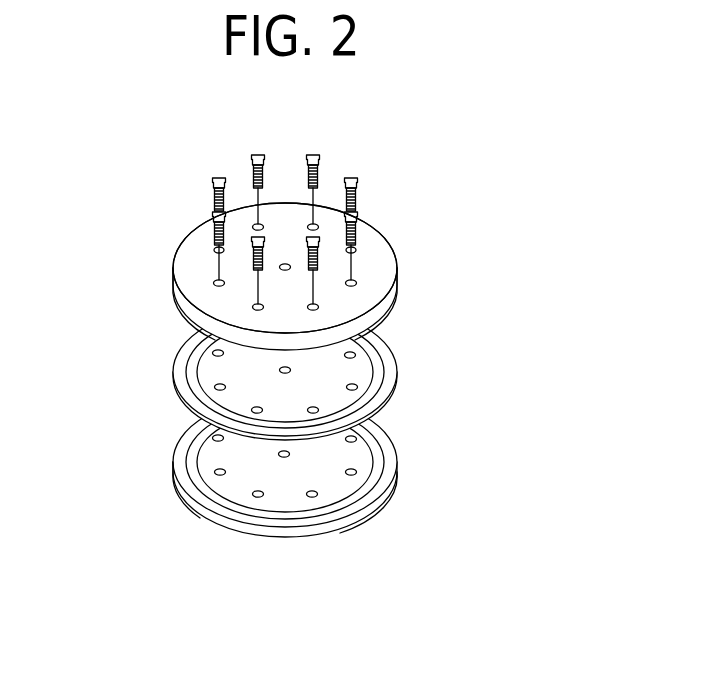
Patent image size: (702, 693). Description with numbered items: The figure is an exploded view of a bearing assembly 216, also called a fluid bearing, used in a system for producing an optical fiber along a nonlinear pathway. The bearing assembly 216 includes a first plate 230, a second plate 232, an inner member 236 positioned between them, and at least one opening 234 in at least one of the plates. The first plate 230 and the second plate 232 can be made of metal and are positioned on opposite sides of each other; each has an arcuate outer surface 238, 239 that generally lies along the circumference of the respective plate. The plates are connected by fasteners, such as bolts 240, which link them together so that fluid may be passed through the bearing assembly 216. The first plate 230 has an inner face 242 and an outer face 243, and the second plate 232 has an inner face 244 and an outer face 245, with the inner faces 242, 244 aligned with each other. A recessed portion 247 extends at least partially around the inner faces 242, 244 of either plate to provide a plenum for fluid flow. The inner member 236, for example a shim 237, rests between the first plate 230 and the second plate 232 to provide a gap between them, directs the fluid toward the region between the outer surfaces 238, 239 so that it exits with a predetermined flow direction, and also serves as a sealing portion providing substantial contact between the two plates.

The bearing assembly 216 is at (315, 363).
The first plate 230 is at (275, 242).
The second plate 232 is at (293, 494).
The opening 234 is at (285, 263).
The inner member 236 is at (296, 374).
The shim 237 is at (182, 367).
The arcuate outer surface of first plate 238 is at (396, 290).
The arcuate outer surface of second plate 239 is at (180, 490).
The bolts 240 is at (319, 160).
The inner face of first plate 242 is at (165, 302).
The outer face of first plate 243 is at (198, 241).
The inner face of second plate 244 is at (393, 442).
The outer face of second plate 245 is at (372, 538).
The recessed portion 247 is at (197, 447).